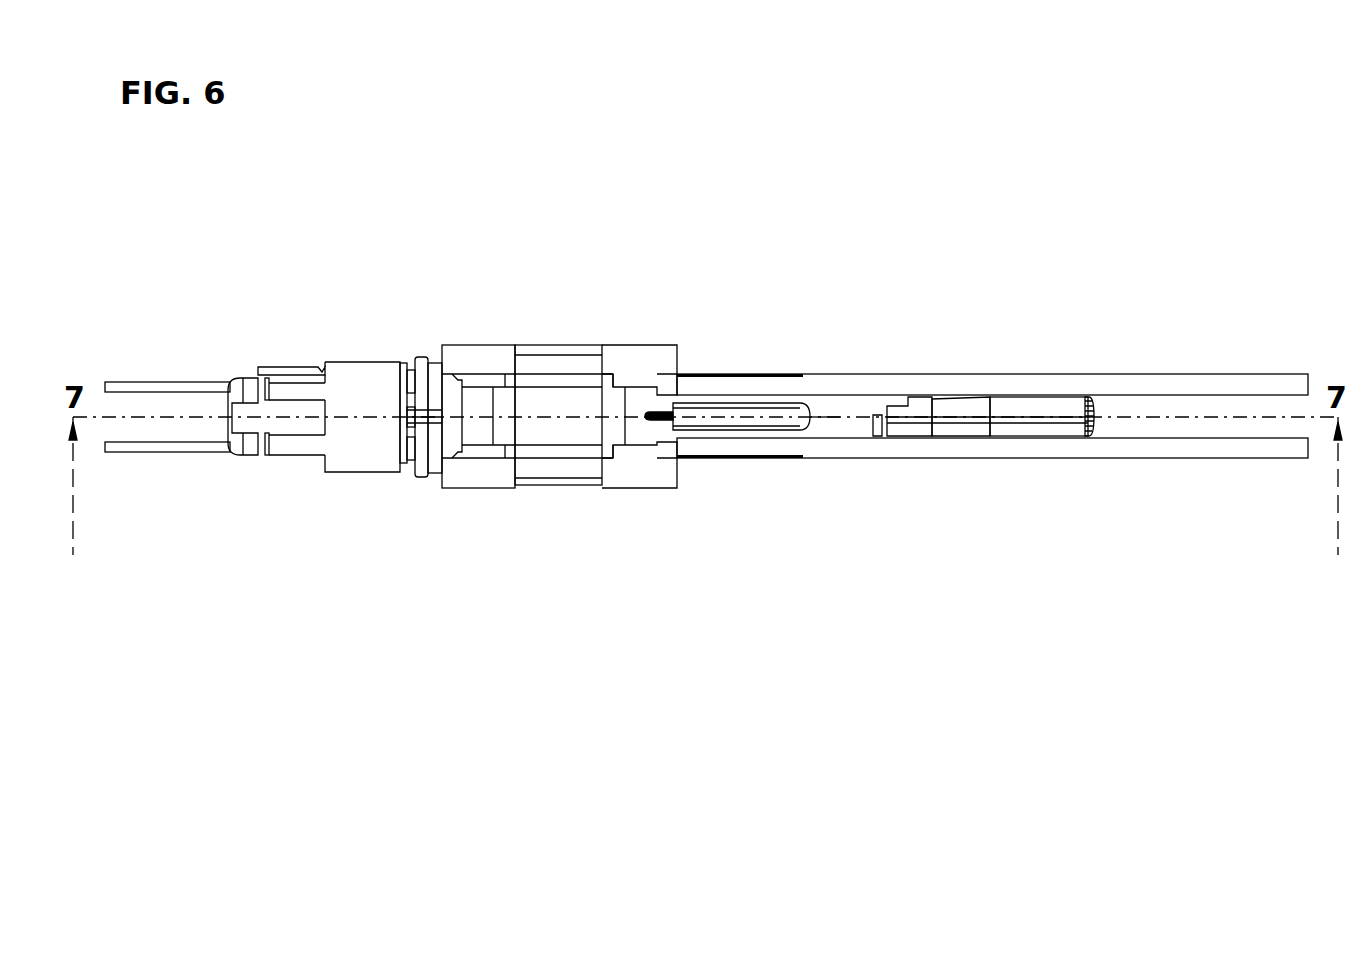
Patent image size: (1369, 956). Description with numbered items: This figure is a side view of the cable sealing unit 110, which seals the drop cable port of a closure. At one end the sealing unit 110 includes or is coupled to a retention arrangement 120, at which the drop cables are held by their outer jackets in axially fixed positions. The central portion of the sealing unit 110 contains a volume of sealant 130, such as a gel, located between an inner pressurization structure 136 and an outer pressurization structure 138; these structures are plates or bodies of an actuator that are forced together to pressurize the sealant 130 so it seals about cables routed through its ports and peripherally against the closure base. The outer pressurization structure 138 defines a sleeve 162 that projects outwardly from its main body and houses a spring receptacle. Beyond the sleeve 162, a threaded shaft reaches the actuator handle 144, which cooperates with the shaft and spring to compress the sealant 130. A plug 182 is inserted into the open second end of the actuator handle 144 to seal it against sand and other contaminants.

The sealing unit 110 is at (750, 362).
The retention arrangement 120 is at (367, 367).
The sealant 130 is at (559, 452).
The inner pressurization structure 136 is at (482, 490).
The outer pressurization structure 138 is at (642, 490).
The actuator handle 144 is at (1038, 397).
The sleeve 162 is at (843, 420).
The plug 182 is at (1094, 408).